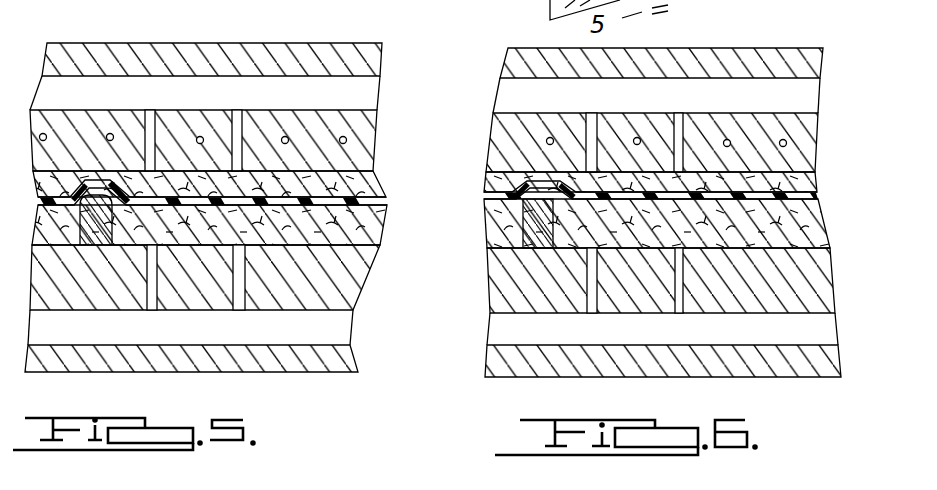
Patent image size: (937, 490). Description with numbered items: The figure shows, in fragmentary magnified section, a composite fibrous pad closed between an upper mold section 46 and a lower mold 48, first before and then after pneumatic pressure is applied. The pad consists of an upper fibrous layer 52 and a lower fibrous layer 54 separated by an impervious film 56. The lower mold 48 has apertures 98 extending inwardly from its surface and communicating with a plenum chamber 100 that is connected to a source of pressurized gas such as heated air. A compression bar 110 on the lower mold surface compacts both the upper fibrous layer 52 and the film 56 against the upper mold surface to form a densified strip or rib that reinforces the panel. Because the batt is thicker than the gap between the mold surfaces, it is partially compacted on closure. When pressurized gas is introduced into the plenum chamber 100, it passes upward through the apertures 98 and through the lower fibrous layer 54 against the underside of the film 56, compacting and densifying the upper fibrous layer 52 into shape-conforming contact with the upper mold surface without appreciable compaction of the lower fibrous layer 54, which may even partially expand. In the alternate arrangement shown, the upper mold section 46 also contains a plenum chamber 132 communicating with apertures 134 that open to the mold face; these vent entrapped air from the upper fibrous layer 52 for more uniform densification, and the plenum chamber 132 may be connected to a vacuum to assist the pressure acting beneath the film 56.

In FIG. 5, the upper mold section 46 is at (363, 135).
In FIG. 6, the upper mold section 46 is at (810, 133).
In FIG. 5, the lower mold 48 is at (347, 283).
In FIG. 6, the lower mold 48 is at (817, 268).
In FIG. 5, the upper fibrous layer 52 is at (377, 186).
In FIG. 6, the upper fibrous layer 52 is at (813, 182).
In FIG. 5, the lower fibrous layer 54 is at (375, 230).
In FIG. 6, the lower fibrous layer 54 is at (817, 223).
In FIG. 5, the film 56 is at (387, 201).
In FIG. 6, the film 56 is at (818, 196).
In FIG. 5, the apertures 98 is at (150, 311).
In FIG. 6, the apertures 98 is at (677, 313).
In FIG. 5, the plenum chamber 100 is at (320, 344).
In FIG. 6, the plenum chamber 100 is at (808, 315).
In FIG. 5, the compression bar 110 is at (100, 230).
In FIG. 6, the compression bar 110 is at (532, 227).
In FIG. 5, the plenum chamber 132 is at (160, 81).
In FIG. 6, the plenum chamber 132 is at (744, 85).
In FIG. 5, the apertures 134 is at (153, 109).
In FIG. 6, the apertures 134 is at (678, 113).